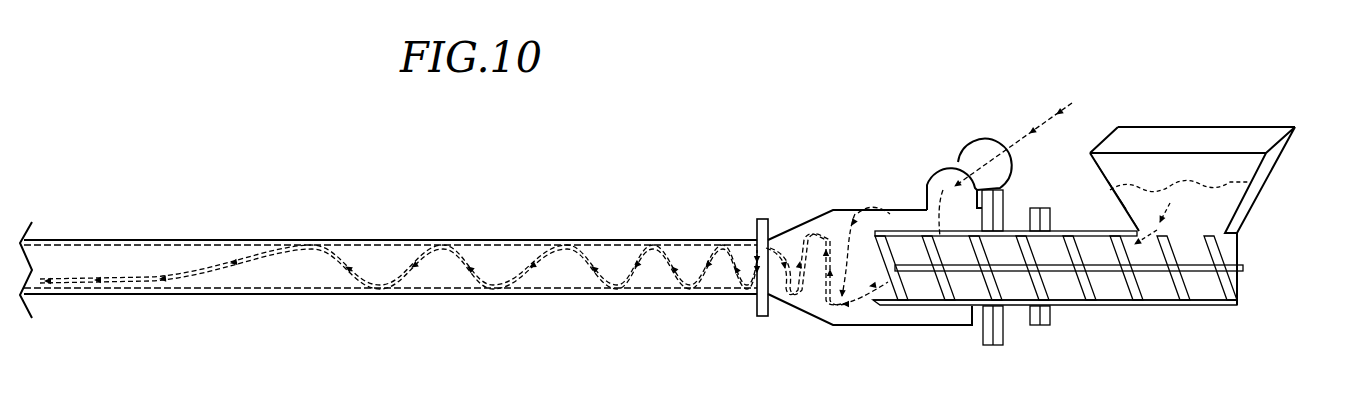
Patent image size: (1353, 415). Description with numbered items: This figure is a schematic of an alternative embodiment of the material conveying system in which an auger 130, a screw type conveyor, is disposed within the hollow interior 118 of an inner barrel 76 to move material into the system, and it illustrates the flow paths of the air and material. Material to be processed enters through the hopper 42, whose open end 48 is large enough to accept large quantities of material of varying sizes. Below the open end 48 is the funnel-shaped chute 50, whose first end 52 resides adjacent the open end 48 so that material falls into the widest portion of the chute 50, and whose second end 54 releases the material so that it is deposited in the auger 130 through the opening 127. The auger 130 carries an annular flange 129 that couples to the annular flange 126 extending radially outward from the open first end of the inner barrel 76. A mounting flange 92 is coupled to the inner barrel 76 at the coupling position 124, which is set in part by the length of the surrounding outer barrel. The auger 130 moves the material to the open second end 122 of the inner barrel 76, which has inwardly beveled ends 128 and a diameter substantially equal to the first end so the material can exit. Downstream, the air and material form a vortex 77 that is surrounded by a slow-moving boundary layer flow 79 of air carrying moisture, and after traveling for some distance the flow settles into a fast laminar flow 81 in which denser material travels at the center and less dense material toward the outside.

The laminar flow 81 is at (153, 277).
The boundary layer flow 79 is at (735, 295).
The vortex 77 is at (848, 230).
The beveled ends 128 is at (875, 233).
The hollow interior 118 is at (948, 235).
The annular flange 129 is at (1050, 208).
The annular flange 126 is at (1030, 208).
The auger 130 is at (1102, 273).
The second end 122 is at (880, 307).
The inner barrel 76 is at (938, 307).
The coupling position 124 is at (972, 307).
The mounting flange 92 is at (1003, 325).
The open end 48 is at (1202, 138).
The hopper 42 is at (1273, 168).
The opening 127 is at (1185, 226).
The first end 52 is at (1115, 195).
The chute 50 is at (1127, 203).
The second end 54 is at (1135, 227).